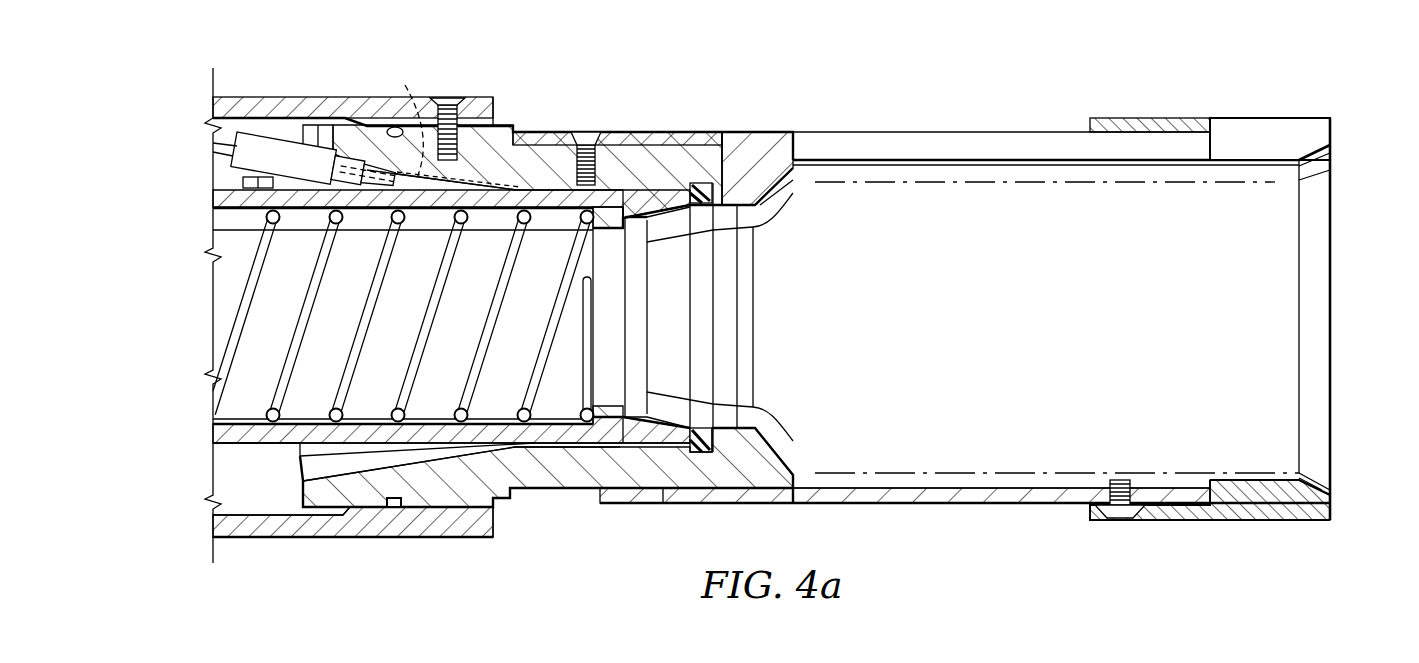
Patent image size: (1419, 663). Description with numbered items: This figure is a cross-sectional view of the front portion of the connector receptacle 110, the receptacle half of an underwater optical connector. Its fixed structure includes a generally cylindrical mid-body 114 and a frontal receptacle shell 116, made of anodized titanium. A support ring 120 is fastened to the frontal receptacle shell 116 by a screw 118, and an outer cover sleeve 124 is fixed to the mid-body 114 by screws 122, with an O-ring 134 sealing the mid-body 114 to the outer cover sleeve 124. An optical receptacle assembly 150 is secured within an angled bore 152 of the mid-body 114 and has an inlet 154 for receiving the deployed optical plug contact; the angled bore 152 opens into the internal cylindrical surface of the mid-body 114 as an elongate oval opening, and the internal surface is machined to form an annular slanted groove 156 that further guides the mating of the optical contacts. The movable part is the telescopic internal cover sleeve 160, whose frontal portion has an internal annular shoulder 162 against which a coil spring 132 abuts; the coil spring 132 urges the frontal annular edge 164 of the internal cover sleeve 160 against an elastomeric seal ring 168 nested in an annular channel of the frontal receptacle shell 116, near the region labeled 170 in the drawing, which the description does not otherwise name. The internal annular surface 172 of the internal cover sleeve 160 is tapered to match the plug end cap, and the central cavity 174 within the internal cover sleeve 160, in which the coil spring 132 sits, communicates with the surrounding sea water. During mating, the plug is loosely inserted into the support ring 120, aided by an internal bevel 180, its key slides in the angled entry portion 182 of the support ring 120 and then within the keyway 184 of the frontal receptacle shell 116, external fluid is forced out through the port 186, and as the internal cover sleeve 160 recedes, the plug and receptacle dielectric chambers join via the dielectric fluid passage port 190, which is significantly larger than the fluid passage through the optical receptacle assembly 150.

The connector receptacle 110 is at (852, 95).
The mid-body 114 is at (578, 490).
The frontal receptacle shell 116 is at (905, 504).
The screw 118 is at (1115, 520).
The support ring 120 is at (1260, 520).
The screws 122 is at (448, 97).
The outer cover sleeve 124 is at (362, 508).
The coil spring 132 is at (240, 322).
The O-ring 134 is at (393, 508).
The optical receptacle assembly 150 is at (257, 140).
The angled bore 152 is at (478, 178).
The inlet 154 is at (405, 118).
The annular slanted groove 156 is at (410, 190).
The internal cover sleeve 160 is at (250, 422).
The internal annular shoulder 162 is at (613, 403).
The frontal annular edge 164 is at (694, 183).
The elastomeric seal ring 168 is at (708, 425).
The bore 170 is at (698, 452).
The internal annular surface 172 is at (675, 325).
The central cavity 174 is at (230, 278).
The internal bevel 180 is at (1322, 488).
The angled entry portion 182 is at (1275, 118).
The keyway 184 is at (948, 132).
The port 186 is at (738, 172).
The dielectric fluid passage port 190 is at (303, 470).